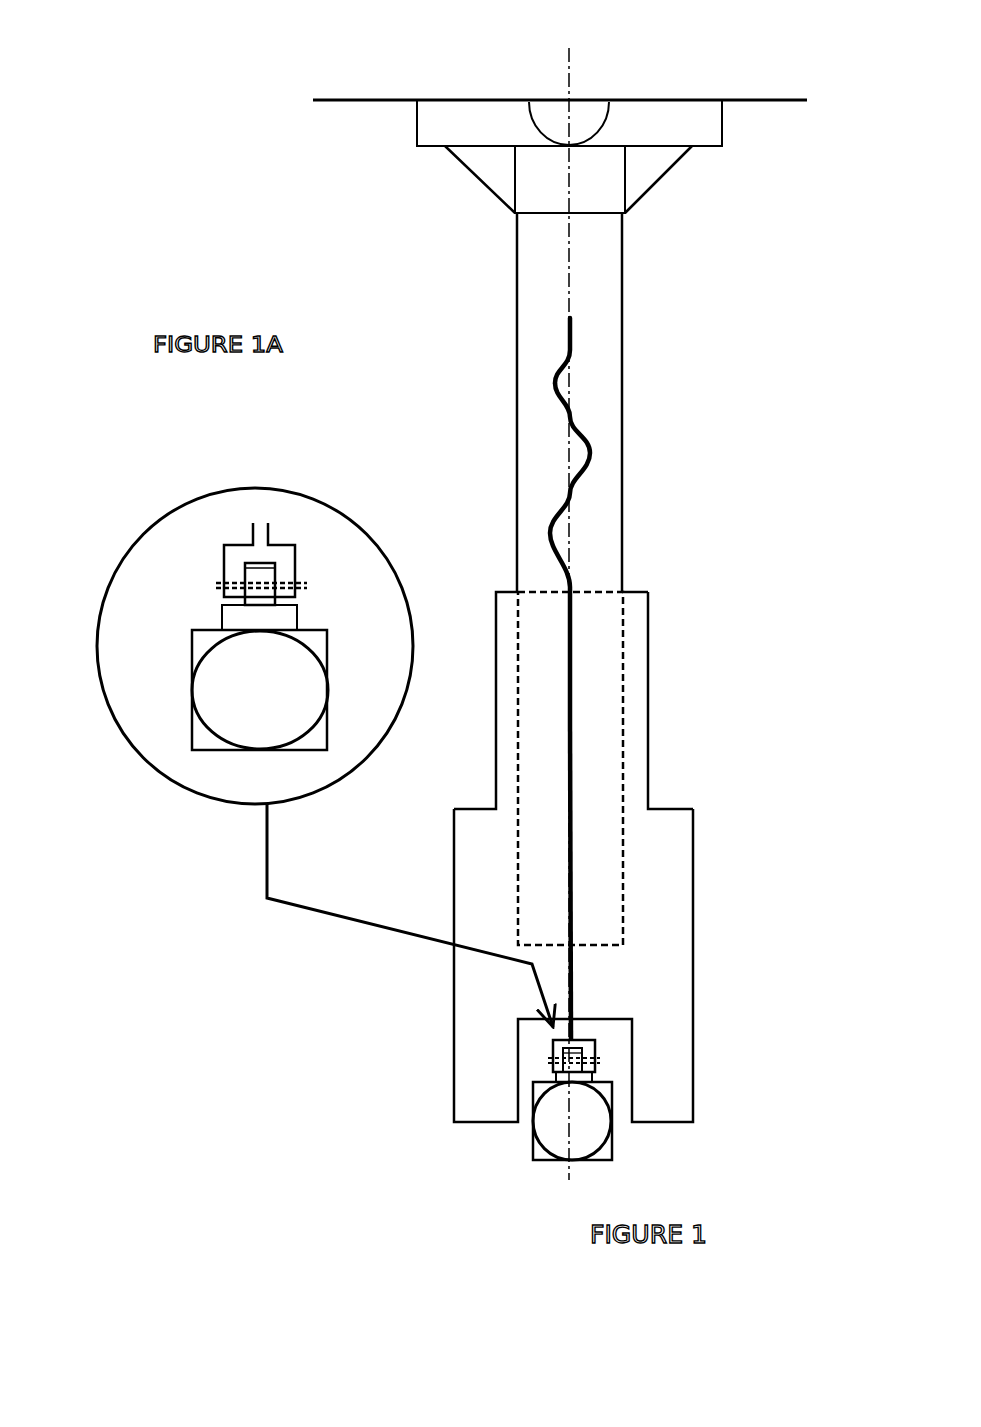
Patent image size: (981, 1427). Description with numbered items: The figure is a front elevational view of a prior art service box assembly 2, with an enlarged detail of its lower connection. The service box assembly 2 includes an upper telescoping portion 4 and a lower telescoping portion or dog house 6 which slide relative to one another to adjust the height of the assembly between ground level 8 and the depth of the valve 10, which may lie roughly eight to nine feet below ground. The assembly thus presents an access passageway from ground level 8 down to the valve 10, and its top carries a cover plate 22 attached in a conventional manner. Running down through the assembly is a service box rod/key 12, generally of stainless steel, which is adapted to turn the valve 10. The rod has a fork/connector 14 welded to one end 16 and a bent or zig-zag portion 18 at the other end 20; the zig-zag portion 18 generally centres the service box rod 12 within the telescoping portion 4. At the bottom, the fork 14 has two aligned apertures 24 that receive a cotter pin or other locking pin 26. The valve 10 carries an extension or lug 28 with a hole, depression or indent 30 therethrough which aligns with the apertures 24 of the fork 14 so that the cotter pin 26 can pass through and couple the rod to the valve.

In FIG. 1, the service box assembly 2 is at (622, 422).
In FIG. 1, the upper telescoping portion 4 is at (648, 626).
In FIG. 1, the lower telescoping portion or dog house 6 is at (648, 780).
In FIG. 1, the ground level 8 is at (766, 98).
In FIG. 1, the valve 10 is at (590, 1130).
In FIG. 1A, the valve 10 is at (247, 692).
In FIG. 1, the service box rod/key 12 is at (575, 725).
In FIG. 1, the fork/connector 14 is at (595, 1050).
In FIG. 1A, the fork/connector 14 is at (297, 570).
In FIG. 1, the end of rod 16 is at (573, 1040).
In FIG. 1A, the end of rod 16 is at (268, 533).
In FIG. 1, the zig-zag portion 18 is at (577, 570).
In FIG. 1, the other end of rod 20 is at (574, 320).
In FIG. 1, the cover plate 22 is at (708, 135).
In FIG. 1, the aligned apertures 24 is at (597, 1062).
In FIG. 1A, the aligned apertures 24 is at (302, 593).
In FIG. 1, the cotter pin 26 is at (552, 1060).
In FIG. 1A, the cotter pin 26 is at (216, 584).
In FIG. 1, the extension or lug 28 is at (550, 1097).
In FIG. 1A, the extension or lug 28 is at (255, 593).
In FIG. 1, the hole, depression or indent 30 is at (553, 1047).
In FIG. 1A, the hole, depression or indent 30 is at (243, 570).